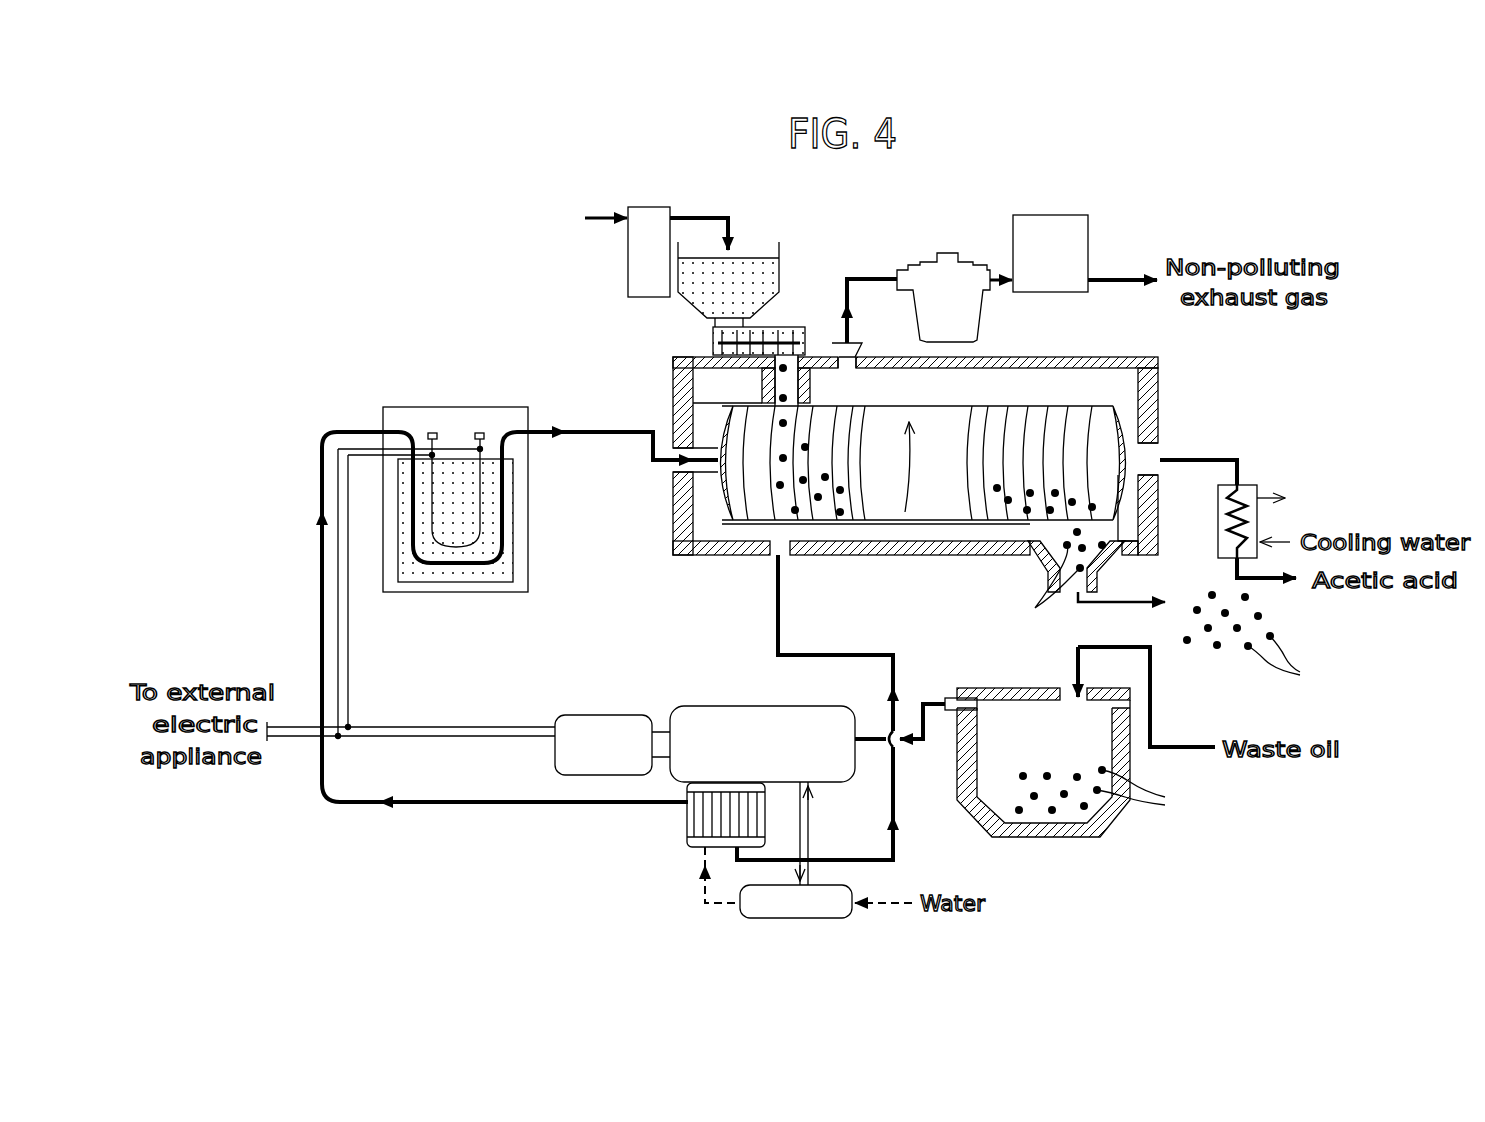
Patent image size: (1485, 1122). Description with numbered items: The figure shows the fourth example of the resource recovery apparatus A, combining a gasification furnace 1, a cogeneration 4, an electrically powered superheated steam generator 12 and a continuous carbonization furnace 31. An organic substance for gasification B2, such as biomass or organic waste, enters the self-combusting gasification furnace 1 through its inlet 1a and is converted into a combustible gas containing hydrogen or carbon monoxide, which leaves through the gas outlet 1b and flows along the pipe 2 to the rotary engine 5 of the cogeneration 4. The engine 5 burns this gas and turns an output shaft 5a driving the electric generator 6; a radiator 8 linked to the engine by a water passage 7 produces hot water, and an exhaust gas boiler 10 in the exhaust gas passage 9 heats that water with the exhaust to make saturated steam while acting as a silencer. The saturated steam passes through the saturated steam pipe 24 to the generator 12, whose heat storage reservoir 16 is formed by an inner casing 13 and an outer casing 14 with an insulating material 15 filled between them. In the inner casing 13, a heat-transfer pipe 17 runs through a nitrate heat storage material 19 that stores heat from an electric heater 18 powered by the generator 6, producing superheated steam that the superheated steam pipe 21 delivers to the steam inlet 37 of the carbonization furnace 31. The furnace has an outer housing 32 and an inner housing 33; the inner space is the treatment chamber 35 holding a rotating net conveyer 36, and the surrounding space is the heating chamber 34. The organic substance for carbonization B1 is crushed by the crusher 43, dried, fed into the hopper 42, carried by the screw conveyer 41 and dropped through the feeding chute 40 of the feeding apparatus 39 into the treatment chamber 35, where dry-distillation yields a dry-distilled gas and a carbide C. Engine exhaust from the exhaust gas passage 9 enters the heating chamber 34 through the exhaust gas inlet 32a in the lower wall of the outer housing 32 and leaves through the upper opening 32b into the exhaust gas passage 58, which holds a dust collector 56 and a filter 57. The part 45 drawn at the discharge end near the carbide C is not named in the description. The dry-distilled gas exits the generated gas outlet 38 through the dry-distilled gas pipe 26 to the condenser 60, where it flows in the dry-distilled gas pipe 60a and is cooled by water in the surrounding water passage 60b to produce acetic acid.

The gasification furnace 1 is at (1057, 845).
The inlet 1a is at (1070, 685).
The gas outlet 1b is at (947, 697).
The pipe 2 is at (920, 743).
The cogeneration 4 is at (675, 830).
The rotary engine 5 is at (757, 705).
The output shaft 5a is at (660, 732).
The electric generator 6 is at (555, 755).
The water passage 7 is at (800, 828).
The radiator 8 is at (848, 885).
The exhaust gas passage 9 is at (895, 850).
The exhaust gas boiler 10 is at (687, 813).
The electrically powered superheated steam generator 12 is at (403, 405).
The inner casing 13 is at (513, 477).
The outer casing 14 is at (525, 509).
The insulating material 15 is at (517, 565).
The high temperature heat storage reservoir 16 is at (590, 452).
The heat-transfer pipe 17 is at (452, 566).
The electric heater 18 is at (482, 478).
The heat storage material 19 is at (458, 468).
The superheated steam pipe 21 is at (610, 430).
The saturated steam pipe 24 is at (450, 803).
The dry-distilled gas pipe 26 is at (1215, 450).
The carbonization furnace 31 is at (919, 579).
The outer housing 32 is at (1125, 355).
The exhaust gas inlet 32a is at (783, 548).
The exhaust gas inlet 32b is at (862, 355).
The inner housing 33 is at (980, 402).
The heating chamber 34 is at (983, 355).
The treatment chamber 35 is at (850, 420).
The net conveyer 36 is at (1048, 446).
The inlet for superheated steam 37 is at (717, 445).
The outlet for generated gas 38 is at (1147, 463).
The organic substance feeding apparatus 39 is at (782, 251).
The organic substance feeding chute 40 is at (802, 383).
The screw conveyer 41 is at (767, 330).
The hopper 42 is at (782, 278).
The crusher 43 is at (627, 263).
The discharge chute 45 is at (1040, 560).
The dust collector 56 is at (932, 253).
The filter 57 is at (1088, 222).
The exhaust gas passage 58 is at (875, 278).
The condenser 60 is at (1252, 483).
The dry-distilled gas pipe 60a is at (1258, 488).
The water passage 60b is at (1248, 518).
The apparatus for resource recovery A is at (406, 268).
The organic substance for carbonization B1 is at (587, 219).
The organic substance for gasification B2 is at (1150, 794).
The carbide C is at (1168, 617).